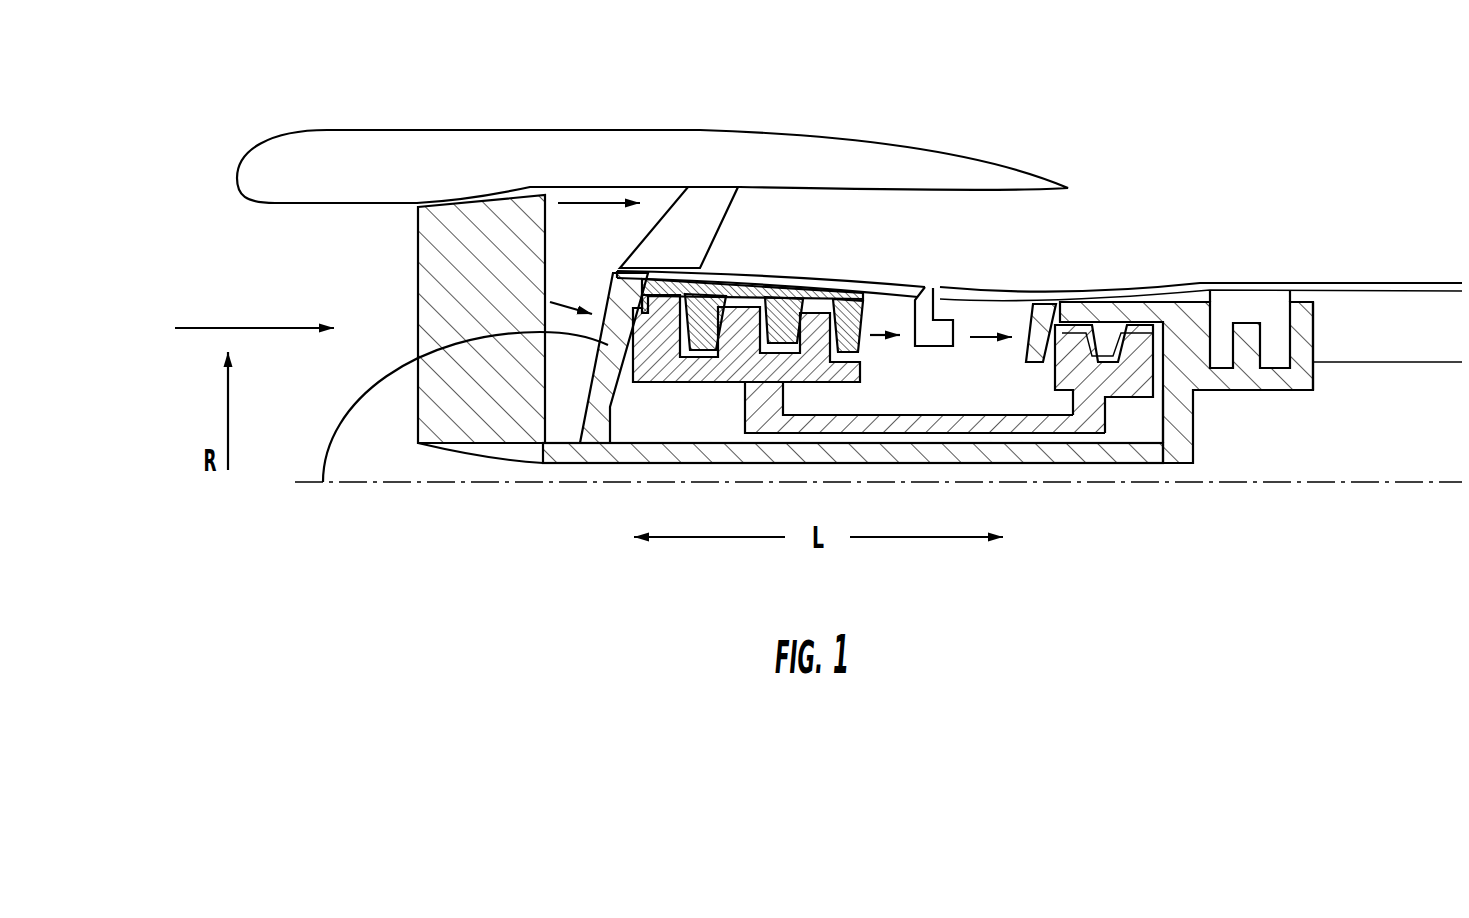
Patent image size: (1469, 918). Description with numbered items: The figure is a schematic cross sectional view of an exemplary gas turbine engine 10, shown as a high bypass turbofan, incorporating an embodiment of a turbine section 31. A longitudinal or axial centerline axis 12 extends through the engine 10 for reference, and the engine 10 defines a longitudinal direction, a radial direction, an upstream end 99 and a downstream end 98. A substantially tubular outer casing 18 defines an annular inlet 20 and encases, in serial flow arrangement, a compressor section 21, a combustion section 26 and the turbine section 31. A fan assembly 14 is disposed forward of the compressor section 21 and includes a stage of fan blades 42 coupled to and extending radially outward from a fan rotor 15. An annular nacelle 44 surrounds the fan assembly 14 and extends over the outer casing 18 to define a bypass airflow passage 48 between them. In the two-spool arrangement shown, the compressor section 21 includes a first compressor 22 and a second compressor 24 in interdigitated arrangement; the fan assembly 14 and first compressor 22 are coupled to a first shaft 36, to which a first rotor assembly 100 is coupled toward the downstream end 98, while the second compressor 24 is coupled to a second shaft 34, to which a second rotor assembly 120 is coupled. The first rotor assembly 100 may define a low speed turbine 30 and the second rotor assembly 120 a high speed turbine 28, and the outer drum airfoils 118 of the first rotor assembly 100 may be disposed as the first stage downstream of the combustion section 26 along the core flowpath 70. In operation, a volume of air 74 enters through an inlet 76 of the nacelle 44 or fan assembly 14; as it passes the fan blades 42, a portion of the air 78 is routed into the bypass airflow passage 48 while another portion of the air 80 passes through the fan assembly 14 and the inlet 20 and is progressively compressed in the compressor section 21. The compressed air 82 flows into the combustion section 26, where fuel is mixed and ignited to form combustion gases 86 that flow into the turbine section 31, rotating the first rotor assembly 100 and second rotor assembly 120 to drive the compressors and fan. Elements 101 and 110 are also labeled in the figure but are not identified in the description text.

The gas turbine engine 10 is at (850, 80).
The longitudinal or axial centerline axis 12 is at (1222, 483).
The fan assembly 14 is at (388, 329).
The fan rotor 15 is at (420, 420).
The outer casing 18 is at (1352, 282).
The annular inlet 20 is at (598, 278).
The compressor section 21 is at (760, 265).
The first compressor 22 is at (707, 292).
The second compressor 24 is at (700, 377).
The combustion section 26 is at (966, 270).
The high speed turbine 28 is at (1057, 383).
The low speed turbine 30 is at (1300, 328).
The turbine section 31 is at (1174, 236).
The second shaft 34 is at (893, 422).
The first shaft 36 is at (756, 452).
The fan blades 42 is at (430, 225).
The nacelle 44 is at (433, 165).
The bypass airflow passage 48 is at (880, 229).
The core flowpath 70 is at (1429, 351).
The volume of air 74 is at (218, 327).
The inlet 76 is at (292, 283).
The bypass air 78 is at (585, 205).
The core air 80 is at (568, 315).
The compressed air 82 is at (883, 336).
The combustion gases 86 is at (990, 330).
The downstream end 98 is at (1467, 430).
The upstream end 99 is at (131, 416).
The first rotor assembly 100 is at (1200, 300).
The hanger flange 101 is at (1232, 305).
The seal land 110 is at (842, 294).
The outer drum airfoils 118 is at (876, 284).
The second rotor assembly 120 is at (1130, 390).